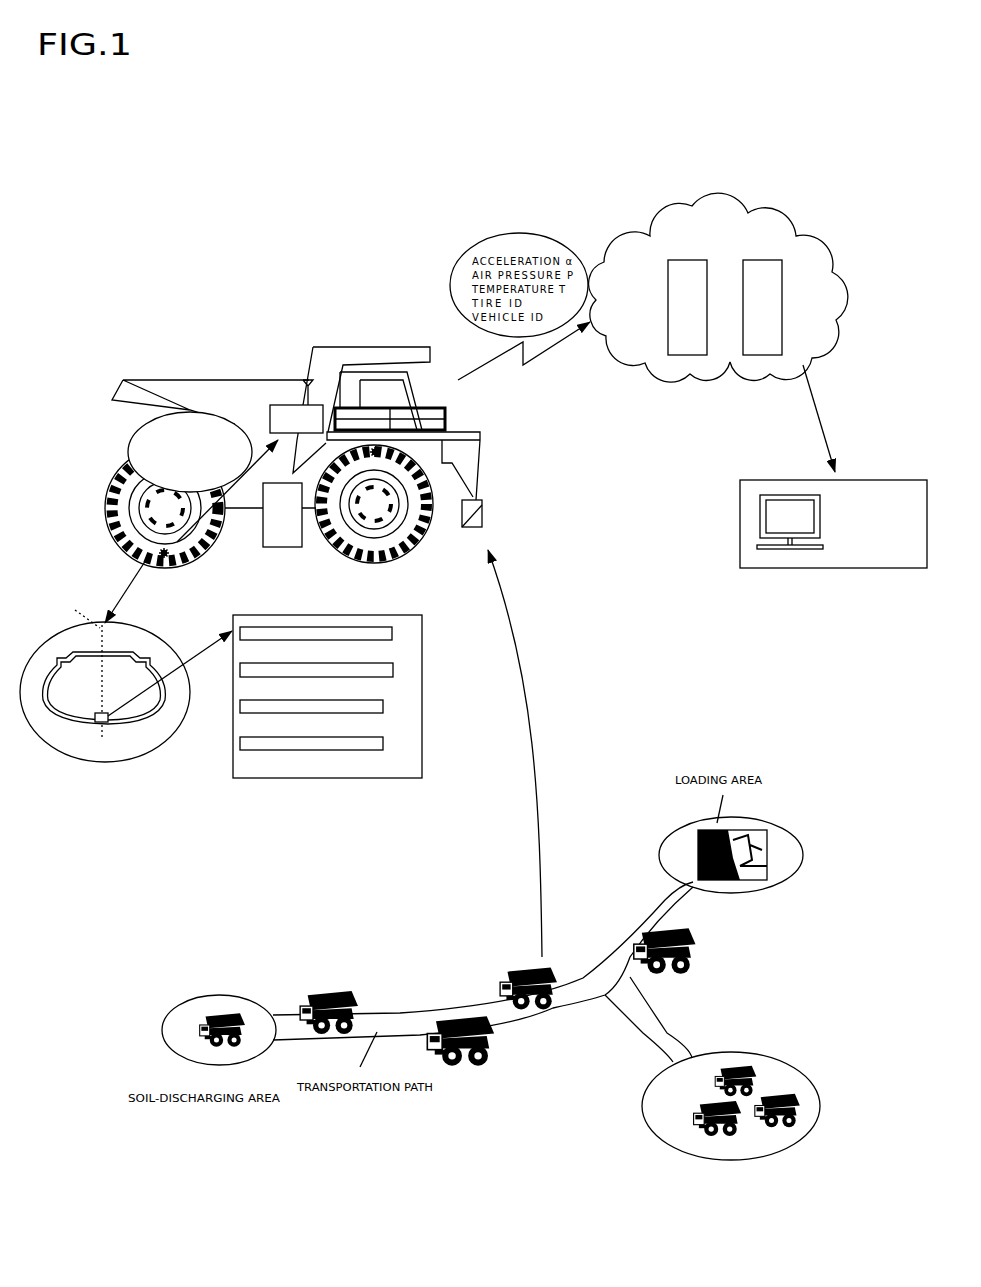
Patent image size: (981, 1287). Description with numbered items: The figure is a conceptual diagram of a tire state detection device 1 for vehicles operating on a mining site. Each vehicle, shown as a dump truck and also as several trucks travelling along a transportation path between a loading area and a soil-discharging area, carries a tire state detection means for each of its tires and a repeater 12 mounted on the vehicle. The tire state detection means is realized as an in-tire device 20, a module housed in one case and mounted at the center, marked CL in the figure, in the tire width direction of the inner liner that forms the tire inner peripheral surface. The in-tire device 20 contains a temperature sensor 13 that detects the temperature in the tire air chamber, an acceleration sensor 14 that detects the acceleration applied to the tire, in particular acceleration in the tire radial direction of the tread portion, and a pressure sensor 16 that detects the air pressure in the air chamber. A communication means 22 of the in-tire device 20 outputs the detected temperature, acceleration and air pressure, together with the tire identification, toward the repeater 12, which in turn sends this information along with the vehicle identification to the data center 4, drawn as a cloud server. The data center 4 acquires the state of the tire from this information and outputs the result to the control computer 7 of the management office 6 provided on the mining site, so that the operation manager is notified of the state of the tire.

The tire state detection device 1 is at (188, 226).
The data center 4 is at (784, 240).
The management office (control center) 6 is at (836, 503).
The control computer 7 is at (784, 496).
The repeater 12 is at (285, 412).
The temperature sensor 13 is at (392, 633).
The acceleration sensor 14 is at (393, 669).
The pressure sensor 16 is at (348, 708).
The in-tire device 20 is at (307, 615).
The communication means 22 is at (383, 743).